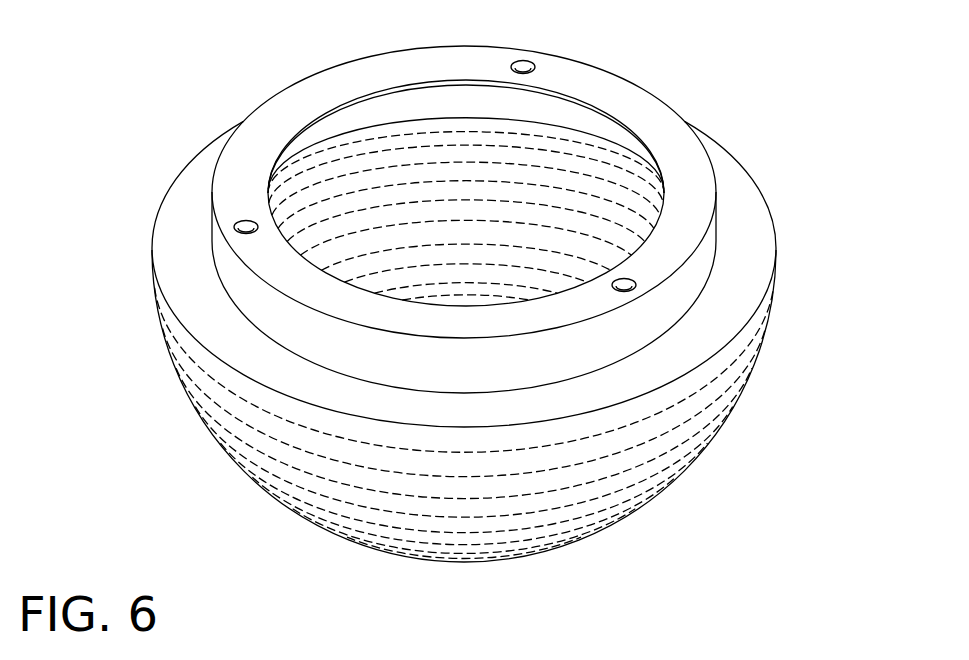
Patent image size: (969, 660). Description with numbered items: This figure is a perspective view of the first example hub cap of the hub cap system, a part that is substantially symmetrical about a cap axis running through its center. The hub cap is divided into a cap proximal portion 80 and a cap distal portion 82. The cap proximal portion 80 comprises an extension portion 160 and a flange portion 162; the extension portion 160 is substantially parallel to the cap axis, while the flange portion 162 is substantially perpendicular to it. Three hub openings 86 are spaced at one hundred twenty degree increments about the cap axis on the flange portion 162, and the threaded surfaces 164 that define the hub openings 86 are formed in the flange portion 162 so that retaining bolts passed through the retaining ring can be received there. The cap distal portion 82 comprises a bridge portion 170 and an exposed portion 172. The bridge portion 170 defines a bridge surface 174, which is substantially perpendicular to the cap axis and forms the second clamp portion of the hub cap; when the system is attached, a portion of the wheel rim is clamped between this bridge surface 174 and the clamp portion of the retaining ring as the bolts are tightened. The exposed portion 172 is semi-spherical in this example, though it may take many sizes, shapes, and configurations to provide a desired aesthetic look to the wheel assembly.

The cap proximal portion 80 is at (709, 152).
The cap distal portion 82 is at (236, 491).
The hub openings 86 is at (243, 220).
The extension portion 160 is at (706, 262).
The flange portion 162 is at (612, 105).
The threaded surfaces 164 is at (258, 230).
The bridge portion 170 is at (750, 292).
The exposed portion 172 is at (746, 409).
The bridge surface 174 is at (689, 339).